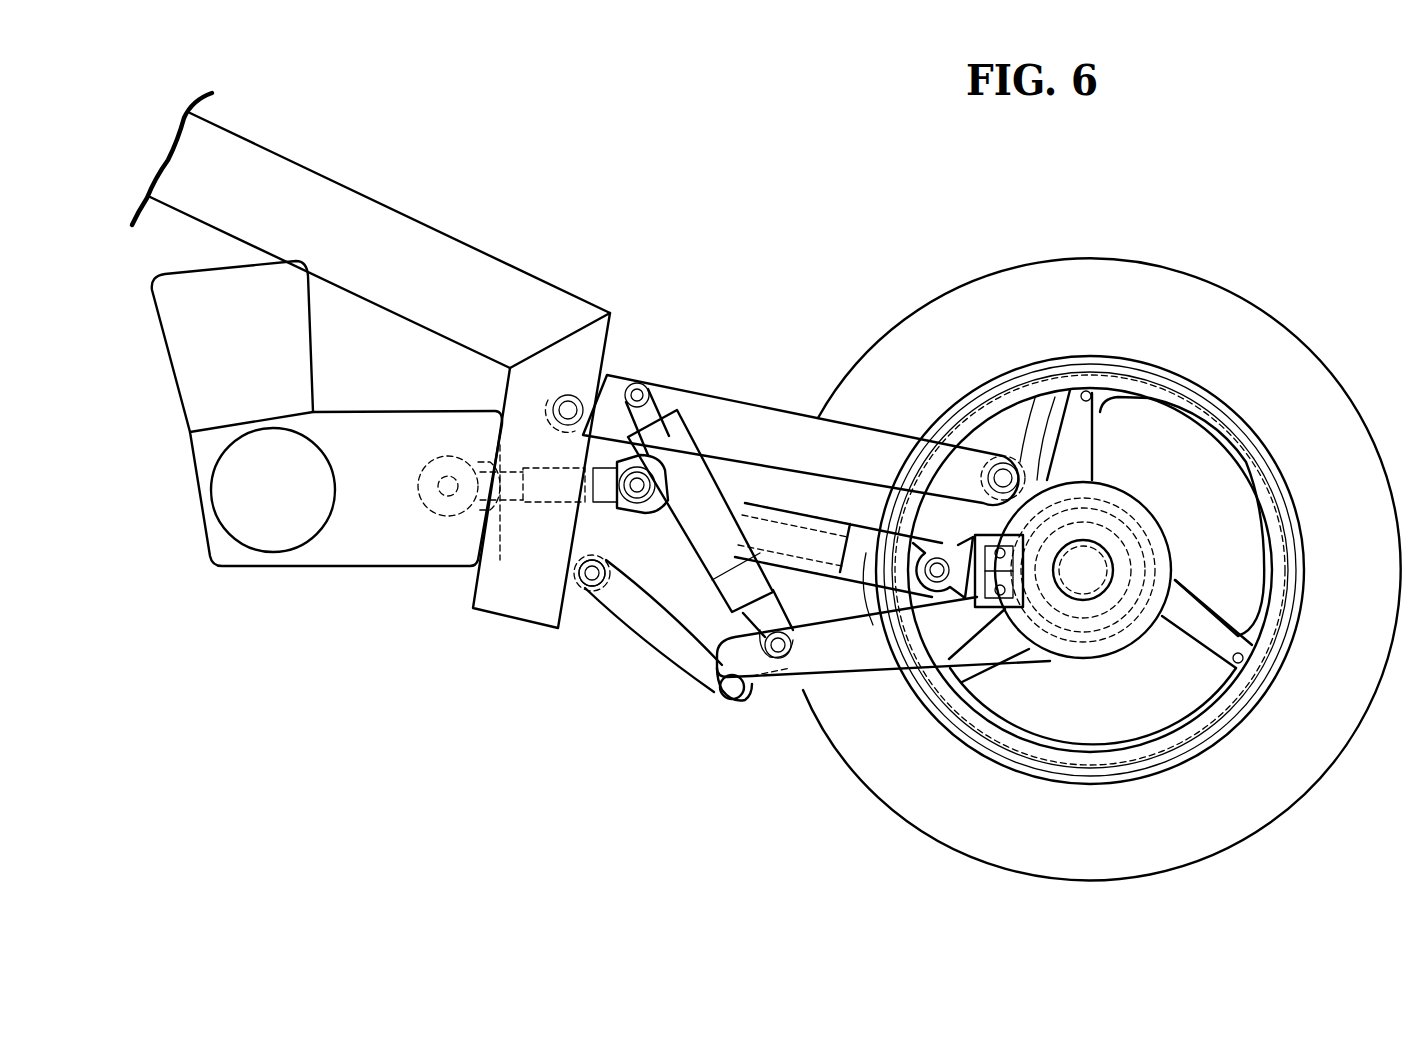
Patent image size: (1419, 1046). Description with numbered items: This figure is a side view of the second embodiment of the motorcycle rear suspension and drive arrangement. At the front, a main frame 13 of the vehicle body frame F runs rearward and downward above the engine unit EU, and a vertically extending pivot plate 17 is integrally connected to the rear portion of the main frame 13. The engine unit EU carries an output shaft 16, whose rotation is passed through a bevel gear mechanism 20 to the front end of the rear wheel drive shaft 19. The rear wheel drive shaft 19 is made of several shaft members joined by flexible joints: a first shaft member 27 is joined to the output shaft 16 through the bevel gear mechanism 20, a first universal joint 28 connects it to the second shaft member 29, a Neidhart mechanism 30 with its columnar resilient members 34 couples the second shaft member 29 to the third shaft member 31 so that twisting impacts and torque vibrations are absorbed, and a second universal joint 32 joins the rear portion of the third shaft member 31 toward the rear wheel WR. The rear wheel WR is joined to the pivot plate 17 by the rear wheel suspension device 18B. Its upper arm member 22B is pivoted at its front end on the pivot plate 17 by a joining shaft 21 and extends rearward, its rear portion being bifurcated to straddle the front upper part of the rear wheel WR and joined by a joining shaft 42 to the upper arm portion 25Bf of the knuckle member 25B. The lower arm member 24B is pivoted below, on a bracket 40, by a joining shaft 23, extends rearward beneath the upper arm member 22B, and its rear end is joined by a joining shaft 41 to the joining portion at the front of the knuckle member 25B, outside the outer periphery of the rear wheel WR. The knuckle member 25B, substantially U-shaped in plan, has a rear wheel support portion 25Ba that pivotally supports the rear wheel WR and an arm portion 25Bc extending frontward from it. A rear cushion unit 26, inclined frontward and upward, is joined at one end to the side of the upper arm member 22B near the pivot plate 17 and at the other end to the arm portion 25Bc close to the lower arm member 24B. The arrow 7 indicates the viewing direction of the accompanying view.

The main frames 13 is at (418, 216).
The vehicle body frame F is at (331, 165).
The engine unit EU is at (344, 578).
The pivot plates 17 is at (500, 612).
The output shaft 16 is at (440, 470).
The bevel gear mechanism 20 is at (443, 522).
The first shaft member 27 is at (540, 468).
The joining shaft 21 is at (568, 395).
The rear wheel suspension device 18B is at (766, 392).
The upper arm member 22B is at (680, 397).
The joining shafts 42 is at (1003, 468).
The rear cushion units 26 is at (700, 522).
The first universal joint 28 is at (612, 512).
The second shaft member 29 is at (822, 495).
The Neidhart mechanism 30 is at (740, 488).
The brackets 40 is at (577, 592).
The joining shaft 23 is at (592, 586).
The lower arm member 24B is at (628, 624).
The joining shaft 41 is at (722, 700).
The third shaft member 31 is at (867, 617).
The rear wheel drive shaft 19 is at (820, 650).
The knuckle member 25B is at (891, 685).
The arm portion 25Bc is at (811, 575).
The second universal joint 32 is at (952, 612).
The columnar resilient members 34 is at (990, 620).
The rear wheel WR is at (1205, 307).
The upper arm portion 25Bf is at (1038, 415).
The rear wheel support portion 25Ba is at (1165, 485).
The arrow 7 is at (727, 855).